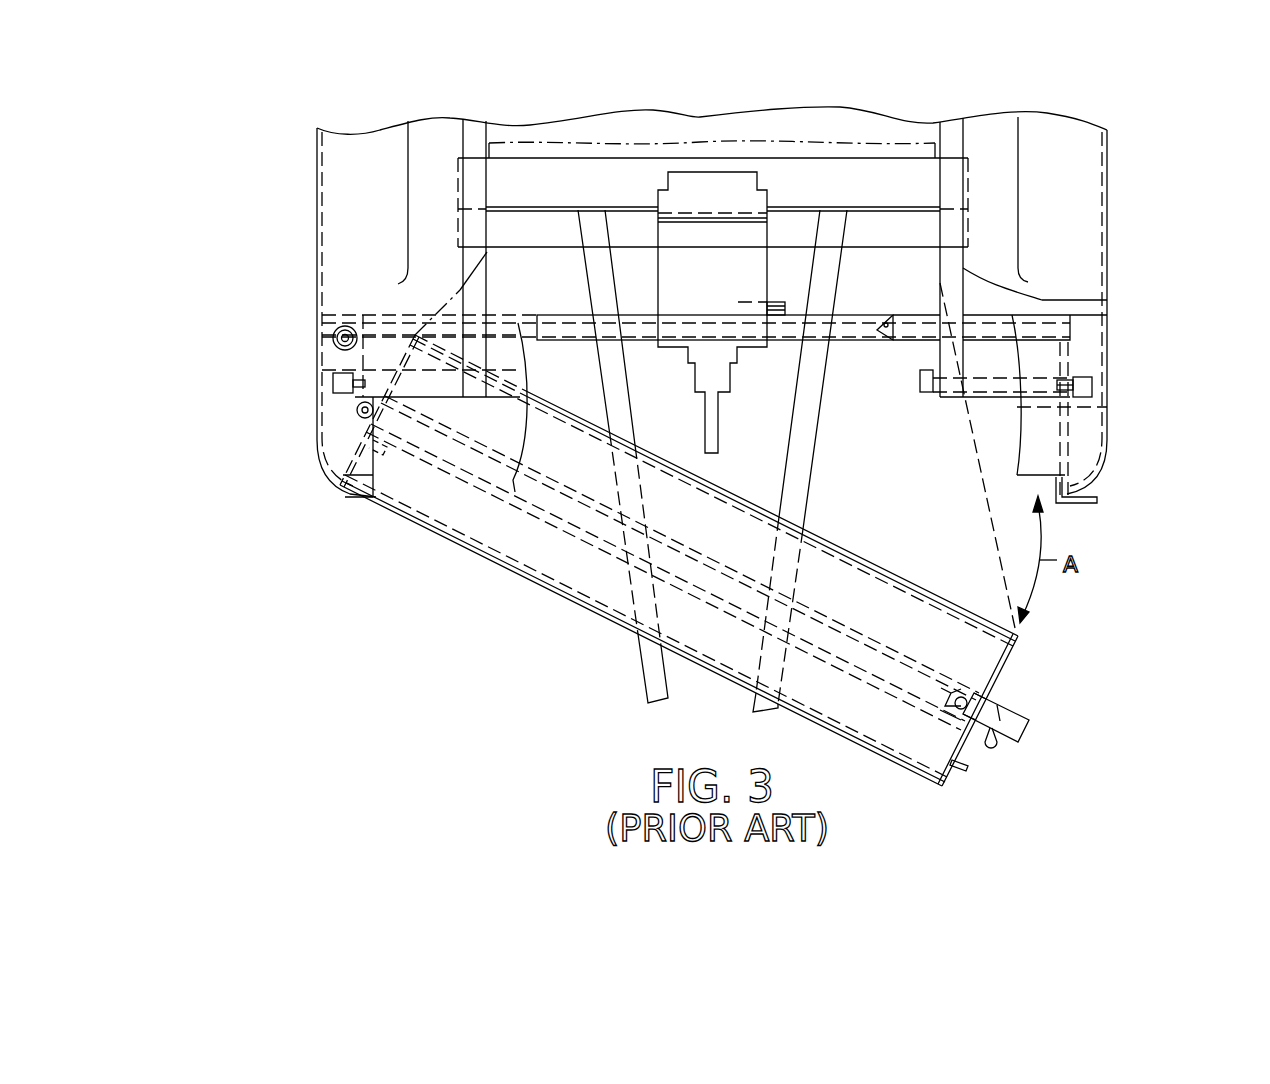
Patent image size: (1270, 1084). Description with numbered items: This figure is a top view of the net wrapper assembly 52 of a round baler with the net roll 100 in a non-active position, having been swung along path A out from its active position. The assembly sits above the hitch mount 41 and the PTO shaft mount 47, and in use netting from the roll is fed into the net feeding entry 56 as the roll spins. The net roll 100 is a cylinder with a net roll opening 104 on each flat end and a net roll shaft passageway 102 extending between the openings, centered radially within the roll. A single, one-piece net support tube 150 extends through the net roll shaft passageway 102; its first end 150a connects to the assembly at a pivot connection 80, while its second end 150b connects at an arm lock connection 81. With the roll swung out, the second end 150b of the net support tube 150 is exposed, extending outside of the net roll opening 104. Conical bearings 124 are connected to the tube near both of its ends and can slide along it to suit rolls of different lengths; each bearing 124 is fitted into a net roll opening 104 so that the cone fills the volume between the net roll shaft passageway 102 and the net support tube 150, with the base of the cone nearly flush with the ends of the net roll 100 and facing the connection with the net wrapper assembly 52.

The net wrapper assembly 52 is at (240, 155).
The PTO shaft mount 47 is at (712, 285).
The net feeding entry 56 is at (873, 272).
The hitch mount 41 is at (805, 427).
The pivot connection 80 is at (355, 409).
The arm lock connection 81 is at (1068, 407).
The net roll 100 is at (488, 528).
The net roll shaft passageway 102 is at (573, 535).
The net roll opening 104 is at (990, 699).
The bearing 124 is at (398, 445).
The net support tube 150 is at (708, 638).
The first end of the net support tube 150a is at (355, 410).
The second end of the net support tube 150b is at (1002, 726).